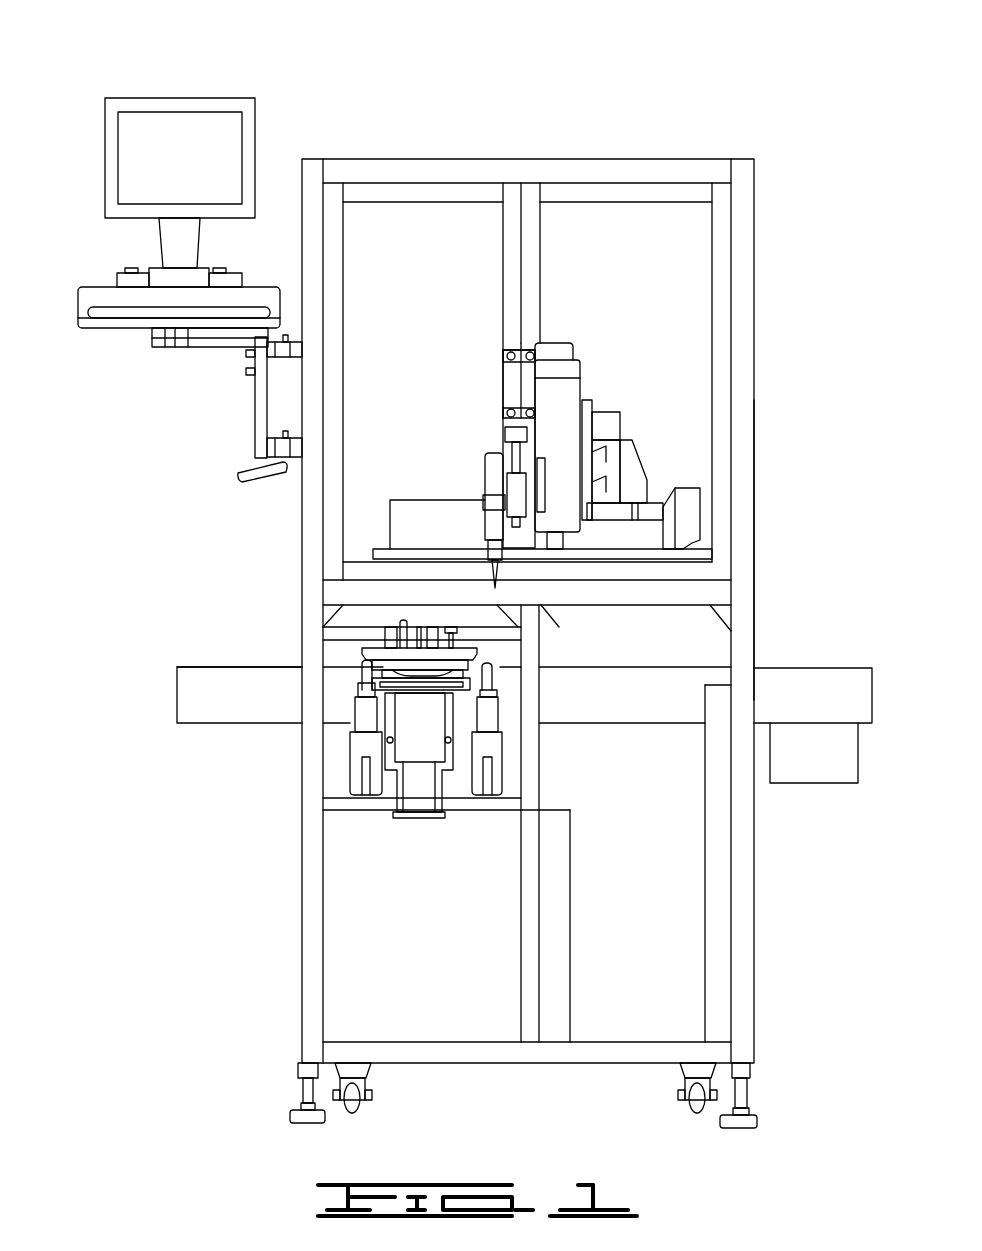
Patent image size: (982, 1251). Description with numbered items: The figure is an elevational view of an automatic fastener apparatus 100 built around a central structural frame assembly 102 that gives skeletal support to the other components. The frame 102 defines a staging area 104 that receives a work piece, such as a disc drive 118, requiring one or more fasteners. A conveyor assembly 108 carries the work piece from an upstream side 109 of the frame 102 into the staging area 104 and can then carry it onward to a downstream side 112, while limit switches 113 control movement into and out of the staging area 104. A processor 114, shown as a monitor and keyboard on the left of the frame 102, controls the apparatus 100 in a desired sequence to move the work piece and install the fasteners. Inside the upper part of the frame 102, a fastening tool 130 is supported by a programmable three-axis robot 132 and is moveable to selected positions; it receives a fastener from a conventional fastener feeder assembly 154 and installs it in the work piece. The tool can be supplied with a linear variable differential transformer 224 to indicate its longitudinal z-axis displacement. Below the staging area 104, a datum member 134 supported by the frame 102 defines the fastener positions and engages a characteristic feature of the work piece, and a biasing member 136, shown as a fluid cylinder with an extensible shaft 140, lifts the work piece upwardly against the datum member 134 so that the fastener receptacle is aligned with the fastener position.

The automatic fastener apparatus 100 is at (569, 572).
The central structural frame assembly 102 is at (760, 290).
The staging area 104 is at (412, 668).
The conveyor assembly 108 is at (210, 722).
The upstream side 109 is at (190, 645).
The downstream side 112 is at (788, 560).
The limit switches 113 is at (355, 785).
The processor 114 is at (122, 244).
The disc drive 118 is at (380, 648).
The fastening tool 130 is at (492, 572).
The programmable three-axis robot 132 is at (478, 414).
The datum member 134 is at (500, 645).
The biasing member 136 is at (401, 620).
The extensible shaft 140 is at (480, 683).
The fastener feeder assembly 154 is at (643, 425).
The linear variable differential transformer 224 is at (504, 352).